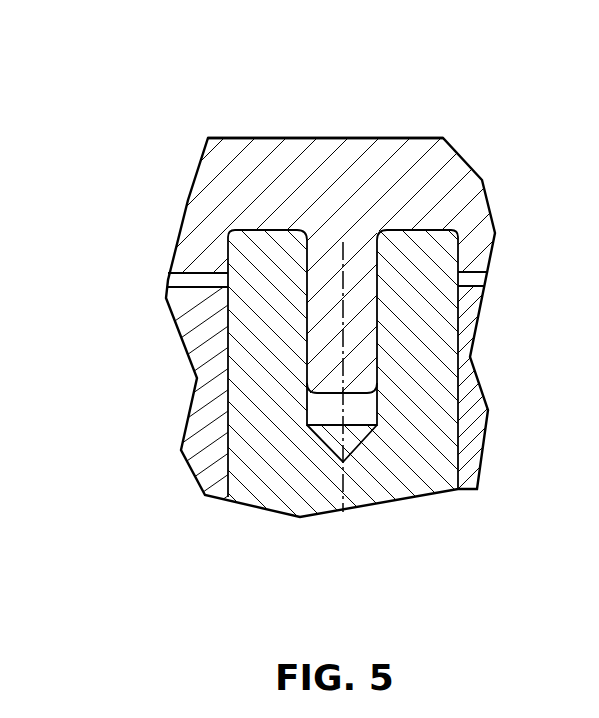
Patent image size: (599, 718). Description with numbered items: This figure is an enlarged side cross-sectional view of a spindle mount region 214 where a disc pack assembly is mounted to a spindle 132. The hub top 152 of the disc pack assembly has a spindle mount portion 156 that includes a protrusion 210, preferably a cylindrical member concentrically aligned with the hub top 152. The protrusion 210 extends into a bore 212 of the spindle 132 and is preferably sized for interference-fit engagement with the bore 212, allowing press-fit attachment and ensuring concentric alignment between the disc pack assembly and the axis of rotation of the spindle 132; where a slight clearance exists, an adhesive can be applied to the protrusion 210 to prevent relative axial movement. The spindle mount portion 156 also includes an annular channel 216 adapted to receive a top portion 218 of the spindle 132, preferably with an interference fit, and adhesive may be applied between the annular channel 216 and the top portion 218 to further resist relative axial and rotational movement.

The spindle mount region 214 is at (176, 104).
The spindle mount portion 156 is at (329, 150).
The hub top 152 is at (448, 182).
The annular channel 216 is at (243, 236).
The top portion 218 is at (248, 250).
The protrusion 210 is at (330, 322).
The bore 212 is at (362, 410).
The spindle 132 is at (452, 430).